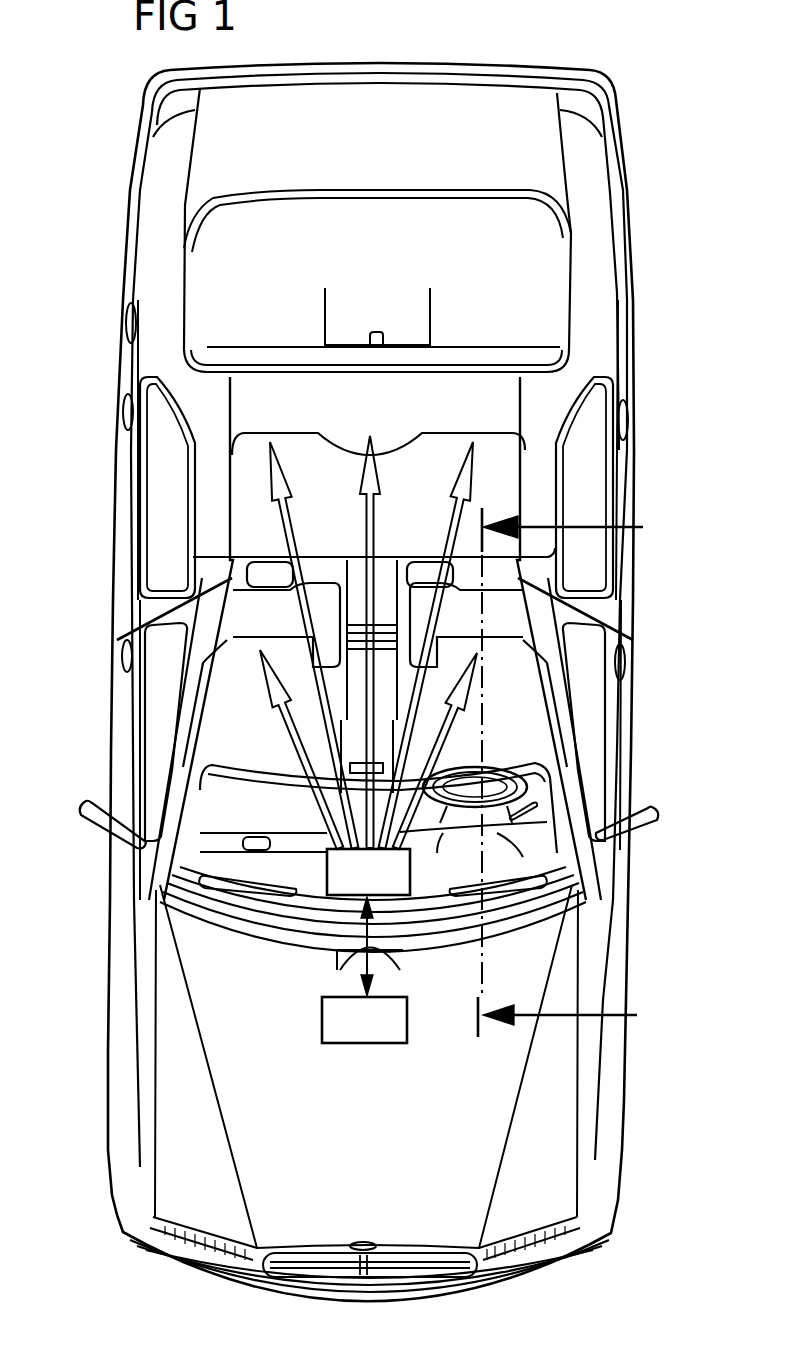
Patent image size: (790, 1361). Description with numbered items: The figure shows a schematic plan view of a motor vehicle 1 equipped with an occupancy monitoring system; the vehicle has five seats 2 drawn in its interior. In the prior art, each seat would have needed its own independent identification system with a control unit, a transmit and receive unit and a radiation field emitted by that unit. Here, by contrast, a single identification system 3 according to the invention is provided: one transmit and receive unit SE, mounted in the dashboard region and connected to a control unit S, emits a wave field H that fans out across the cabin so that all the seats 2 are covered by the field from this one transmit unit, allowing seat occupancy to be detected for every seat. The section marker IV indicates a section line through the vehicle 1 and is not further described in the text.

The motor vehicle 1 is at (121, 132).
The seats 2 is at (330, 478).
The identification system 3 is at (320, 852).
The radiation field H is at (288, 533).
The transmit and receive unit SE is at (368, 872).
The control unit S is at (364, 970).
The section line IV is at (583, 769).